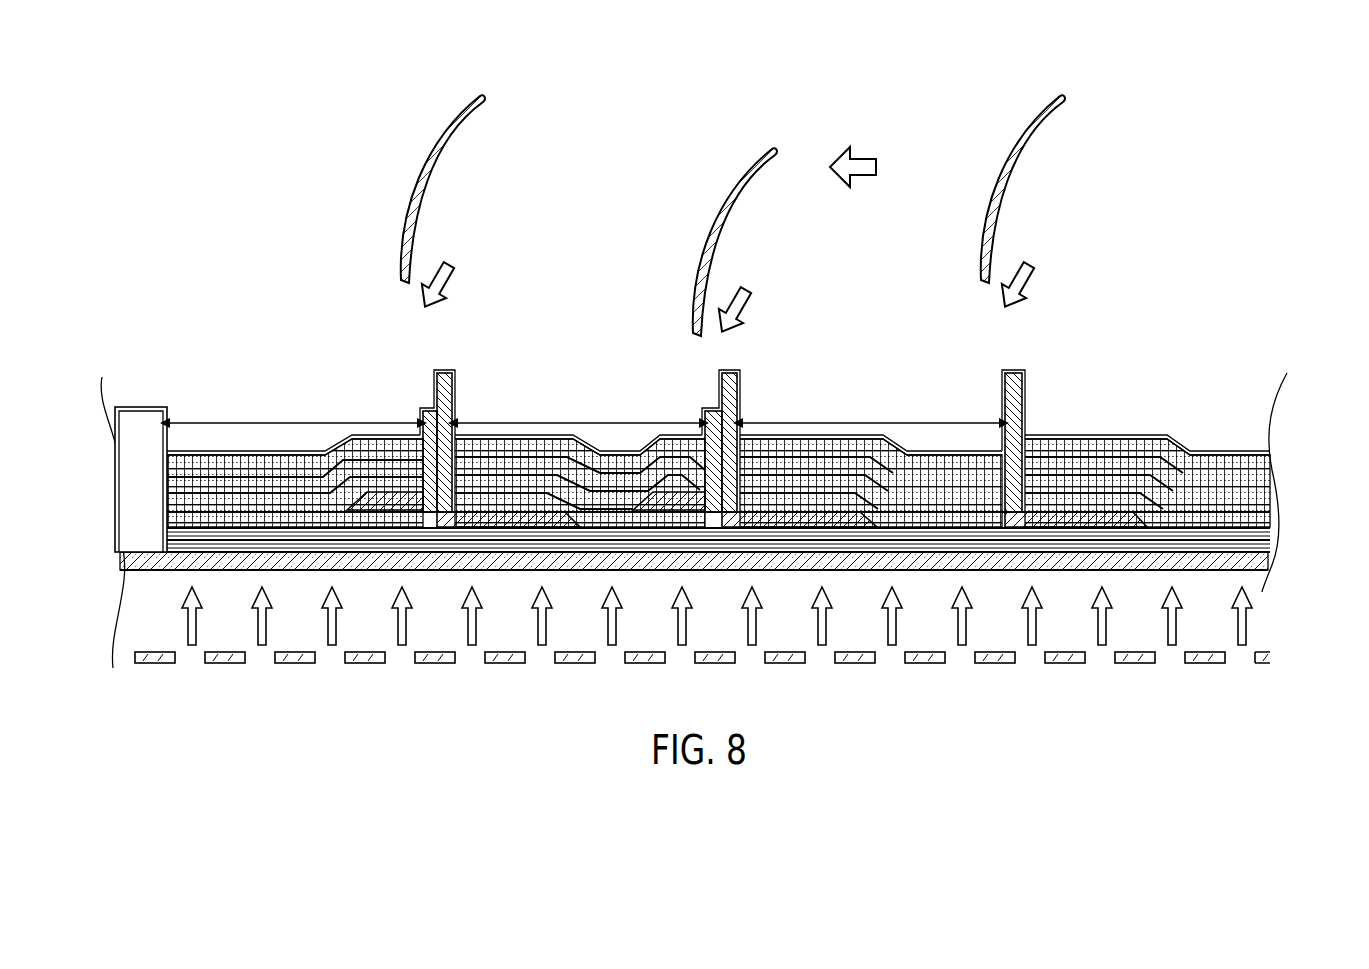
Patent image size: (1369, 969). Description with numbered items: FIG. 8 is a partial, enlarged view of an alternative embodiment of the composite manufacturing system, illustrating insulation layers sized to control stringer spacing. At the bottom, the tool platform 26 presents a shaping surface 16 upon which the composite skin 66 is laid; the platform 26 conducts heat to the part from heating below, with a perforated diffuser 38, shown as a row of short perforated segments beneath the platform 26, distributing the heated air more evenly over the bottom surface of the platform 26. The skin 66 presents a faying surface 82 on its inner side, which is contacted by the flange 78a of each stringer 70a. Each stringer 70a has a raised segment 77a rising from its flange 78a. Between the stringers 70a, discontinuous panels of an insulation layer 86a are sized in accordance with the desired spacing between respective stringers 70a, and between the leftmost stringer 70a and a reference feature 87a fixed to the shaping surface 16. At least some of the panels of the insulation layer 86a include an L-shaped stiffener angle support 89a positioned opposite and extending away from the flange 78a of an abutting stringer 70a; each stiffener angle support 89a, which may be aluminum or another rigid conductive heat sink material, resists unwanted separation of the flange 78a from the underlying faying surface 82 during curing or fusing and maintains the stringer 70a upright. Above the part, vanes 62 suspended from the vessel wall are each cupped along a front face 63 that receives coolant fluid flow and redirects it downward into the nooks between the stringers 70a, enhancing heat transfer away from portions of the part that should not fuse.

The shaping surface 16 is at (145, 548).
The platform 26 is at (155, 575).
The perforated diffuser 38 is at (1000, 668).
The vanes 62 is at (733, 192).
The front face 63 is at (742, 190).
The skin 66 is at (1263, 535).
The stringers 70a is at (447, 370).
The raised segment 77a is at (443, 378).
The flange 78a is at (827, 508).
The faying surface 82 is at (450, 520).
The insulation layer 86a is at (250, 475).
The reference feature 87a is at (140, 420).
The stiffener angle support 89a is at (421, 445).